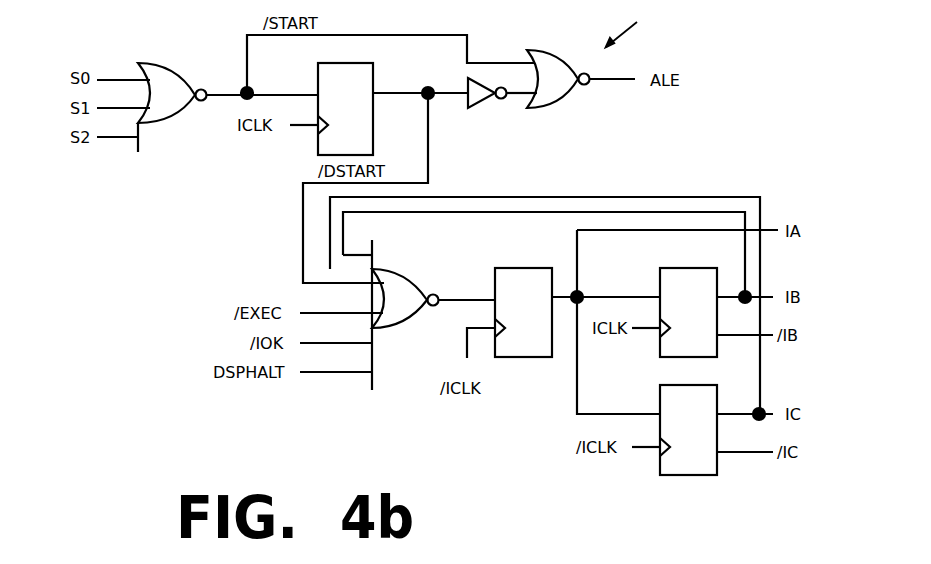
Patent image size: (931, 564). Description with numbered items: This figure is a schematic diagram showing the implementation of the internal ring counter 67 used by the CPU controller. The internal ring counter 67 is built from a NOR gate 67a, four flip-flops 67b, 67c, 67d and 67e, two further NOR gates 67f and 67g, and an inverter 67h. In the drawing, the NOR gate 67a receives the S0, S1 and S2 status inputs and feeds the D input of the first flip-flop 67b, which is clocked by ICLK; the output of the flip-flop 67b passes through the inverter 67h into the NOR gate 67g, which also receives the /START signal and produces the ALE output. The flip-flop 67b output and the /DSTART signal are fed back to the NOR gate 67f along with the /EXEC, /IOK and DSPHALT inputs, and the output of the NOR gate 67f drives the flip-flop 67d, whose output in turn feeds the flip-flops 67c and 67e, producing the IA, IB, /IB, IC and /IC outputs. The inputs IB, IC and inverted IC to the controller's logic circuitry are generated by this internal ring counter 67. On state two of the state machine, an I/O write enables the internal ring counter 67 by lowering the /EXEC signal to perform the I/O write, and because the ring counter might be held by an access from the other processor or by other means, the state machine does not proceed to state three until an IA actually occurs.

The internal ring counter 67 is at (632, 23).
The NOR gate 67a is at (157, 113).
The flip-flop 67b is at (318, 142).
The flip-flop 67c is at (692, 275).
The flip-flop 67d is at (513, 347).
The flip-flop 67e is at (687, 470).
The NOR gate 67f is at (407, 290).
The NOR gate 67g is at (545, 100).
The inverter 67h is at (485, 98).